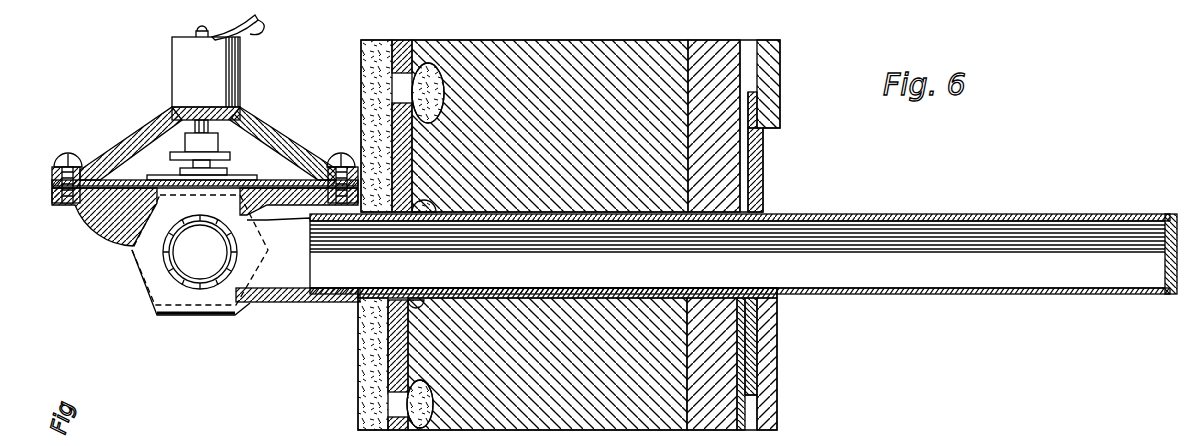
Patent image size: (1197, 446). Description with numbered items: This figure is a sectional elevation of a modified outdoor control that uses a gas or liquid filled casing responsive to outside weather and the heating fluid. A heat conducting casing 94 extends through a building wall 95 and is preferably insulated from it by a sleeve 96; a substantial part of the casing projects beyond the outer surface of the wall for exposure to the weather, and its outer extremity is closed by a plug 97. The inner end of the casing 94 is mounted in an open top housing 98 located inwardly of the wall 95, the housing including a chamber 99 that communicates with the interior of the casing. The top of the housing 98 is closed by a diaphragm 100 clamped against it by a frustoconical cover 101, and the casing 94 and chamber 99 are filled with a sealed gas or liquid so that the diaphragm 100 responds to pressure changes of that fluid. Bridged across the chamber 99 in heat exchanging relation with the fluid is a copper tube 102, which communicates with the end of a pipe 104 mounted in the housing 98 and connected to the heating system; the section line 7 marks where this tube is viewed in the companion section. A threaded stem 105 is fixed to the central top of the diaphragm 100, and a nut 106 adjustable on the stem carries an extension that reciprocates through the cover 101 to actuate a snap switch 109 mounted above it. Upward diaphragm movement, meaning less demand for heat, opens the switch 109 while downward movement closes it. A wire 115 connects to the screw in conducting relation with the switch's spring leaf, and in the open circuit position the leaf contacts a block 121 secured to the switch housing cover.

The section line 7 is at (206, 22).
The heat conducting casing 94 is at (825, 216).
The building wall 95 is at (760, 147).
The sleeve 96 is at (592, 204).
The plug 97 is at (1165, 258).
The open top housing 98 is at (308, 303).
The chamber 99 is at (278, 253).
The diaphragm 100 is at (115, 185).
The frustoconical cover 101 is at (150, 128).
The tube 102 is at (226, 247).
The pipe 104 is at (150, 253).
The threaded stem 105 is at (222, 166).
The nut 106 is at (218, 147).
The snap switch 109 is at (241, 62).
The wire 115 is at (258, 16).
The block 121 is at (262, 32).